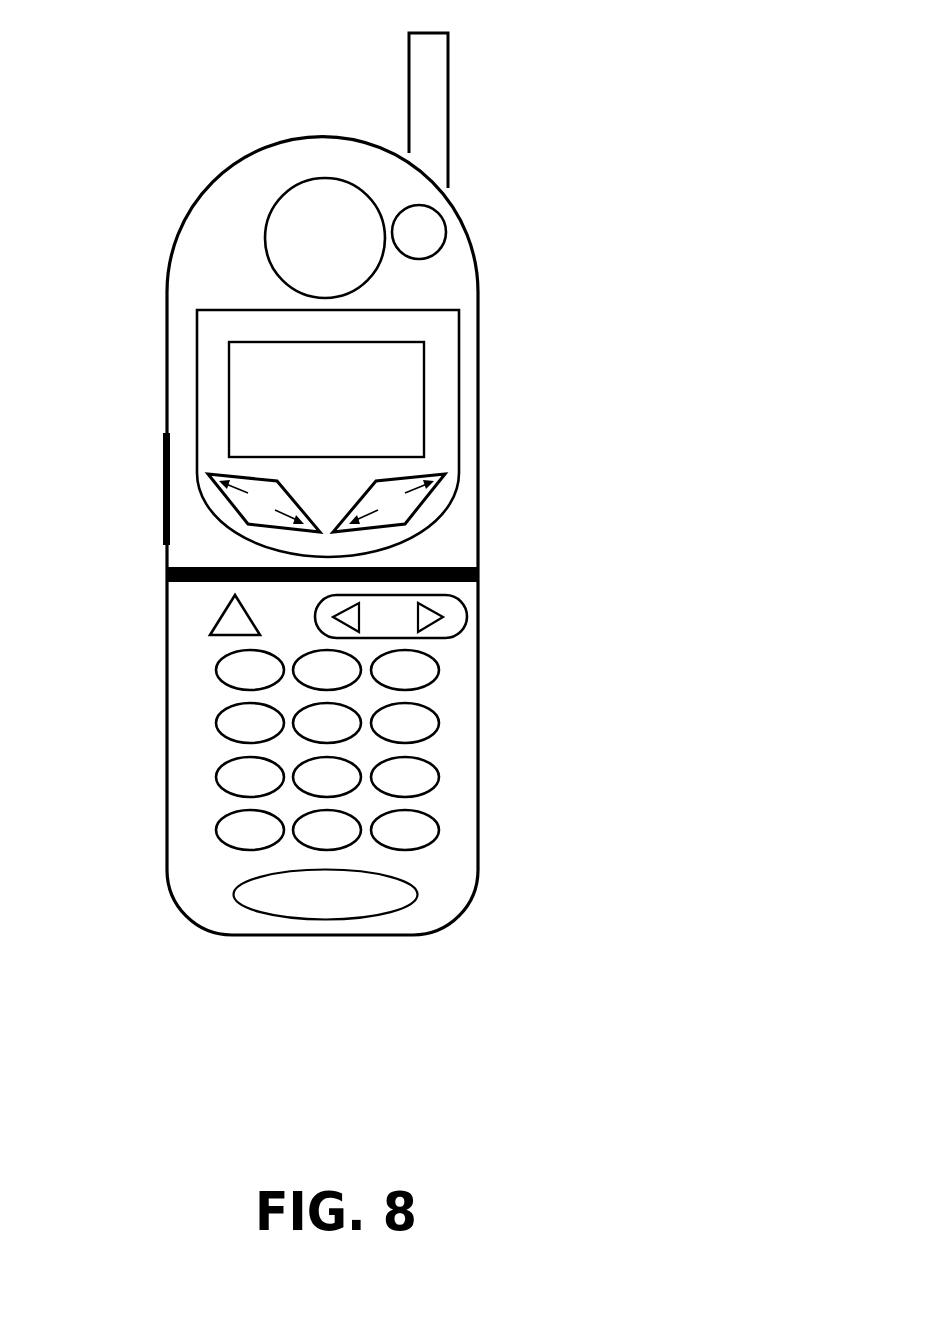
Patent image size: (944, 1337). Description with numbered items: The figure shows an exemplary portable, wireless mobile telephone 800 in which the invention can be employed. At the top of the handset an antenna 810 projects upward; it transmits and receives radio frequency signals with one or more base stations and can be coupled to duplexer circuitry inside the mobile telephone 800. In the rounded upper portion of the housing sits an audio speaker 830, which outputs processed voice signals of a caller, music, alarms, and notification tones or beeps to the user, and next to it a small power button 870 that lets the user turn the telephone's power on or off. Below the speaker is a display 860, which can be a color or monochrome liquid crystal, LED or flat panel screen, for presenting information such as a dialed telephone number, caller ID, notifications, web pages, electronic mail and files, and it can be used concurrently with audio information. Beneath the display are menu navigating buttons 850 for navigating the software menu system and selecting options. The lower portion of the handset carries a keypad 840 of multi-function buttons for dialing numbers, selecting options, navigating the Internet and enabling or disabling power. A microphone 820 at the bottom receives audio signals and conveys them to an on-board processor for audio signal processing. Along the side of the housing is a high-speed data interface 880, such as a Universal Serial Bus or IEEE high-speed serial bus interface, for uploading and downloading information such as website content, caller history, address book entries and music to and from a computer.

The mobile telephone 800 is at (613, 45).
The antenna 810 is at (448, 95).
The microphone 820 is at (323, 920).
The audio speaker 830 is at (275, 205).
The keypad 840 is at (508, 750).
The menu navigating buttons 850 is at (438, 493).
The display 860 is at (425, 372).
The power button 870 is at (445, 223).
The high-speed data interface 880 is at (163, 499).